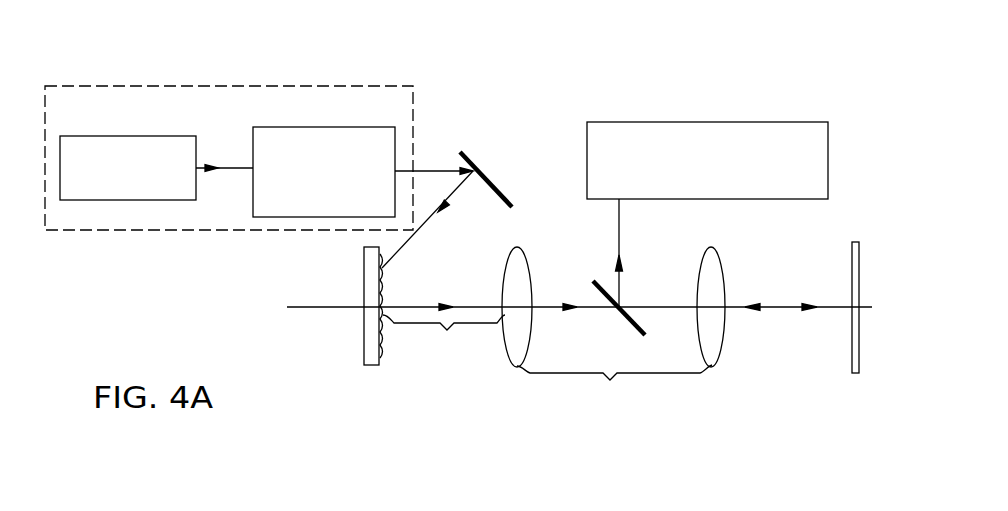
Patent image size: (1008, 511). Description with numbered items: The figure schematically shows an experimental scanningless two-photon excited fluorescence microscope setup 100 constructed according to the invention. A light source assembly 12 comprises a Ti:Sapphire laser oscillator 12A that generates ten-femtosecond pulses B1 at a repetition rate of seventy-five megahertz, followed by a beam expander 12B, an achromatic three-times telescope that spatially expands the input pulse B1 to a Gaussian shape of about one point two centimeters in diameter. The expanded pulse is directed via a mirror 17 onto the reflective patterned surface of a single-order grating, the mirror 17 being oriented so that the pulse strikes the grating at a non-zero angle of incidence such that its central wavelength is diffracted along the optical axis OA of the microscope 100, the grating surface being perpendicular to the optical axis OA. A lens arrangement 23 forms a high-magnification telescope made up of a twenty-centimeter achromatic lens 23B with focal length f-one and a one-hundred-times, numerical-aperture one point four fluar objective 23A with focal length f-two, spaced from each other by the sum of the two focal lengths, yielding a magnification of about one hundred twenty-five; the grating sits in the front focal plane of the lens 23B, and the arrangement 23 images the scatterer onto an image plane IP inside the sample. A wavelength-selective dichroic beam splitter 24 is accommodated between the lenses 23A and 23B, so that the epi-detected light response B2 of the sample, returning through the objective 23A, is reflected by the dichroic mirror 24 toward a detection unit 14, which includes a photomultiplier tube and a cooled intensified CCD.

The TPEF microscope setup 100 is at (127, 60).
The light source assembly 12 is at (125, 232).
The Ti:Sapphire laser oscillator 12A is at (125, 135).
The beam expander 12B is at (317, 127).
The detection unit 14 is at (753, 122).
The mirror 17 is at (474, 163).
The lens arrangement 23 is at (615, 430).
The objective lens 23A is at (710, 245).
The achromatic lens 23B is at (503, 355).
The dichroic beam splitter 24 is at (641, 334).
The image plane IP is at (860, 258).
The input pulse B1 is at (250, 166).
The light response B2 is at (619, 226).
The optical axis OA is at (466, 284).